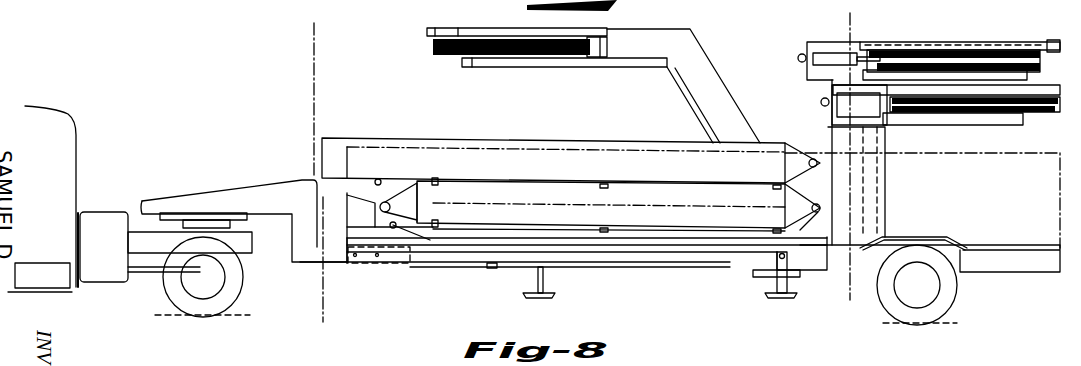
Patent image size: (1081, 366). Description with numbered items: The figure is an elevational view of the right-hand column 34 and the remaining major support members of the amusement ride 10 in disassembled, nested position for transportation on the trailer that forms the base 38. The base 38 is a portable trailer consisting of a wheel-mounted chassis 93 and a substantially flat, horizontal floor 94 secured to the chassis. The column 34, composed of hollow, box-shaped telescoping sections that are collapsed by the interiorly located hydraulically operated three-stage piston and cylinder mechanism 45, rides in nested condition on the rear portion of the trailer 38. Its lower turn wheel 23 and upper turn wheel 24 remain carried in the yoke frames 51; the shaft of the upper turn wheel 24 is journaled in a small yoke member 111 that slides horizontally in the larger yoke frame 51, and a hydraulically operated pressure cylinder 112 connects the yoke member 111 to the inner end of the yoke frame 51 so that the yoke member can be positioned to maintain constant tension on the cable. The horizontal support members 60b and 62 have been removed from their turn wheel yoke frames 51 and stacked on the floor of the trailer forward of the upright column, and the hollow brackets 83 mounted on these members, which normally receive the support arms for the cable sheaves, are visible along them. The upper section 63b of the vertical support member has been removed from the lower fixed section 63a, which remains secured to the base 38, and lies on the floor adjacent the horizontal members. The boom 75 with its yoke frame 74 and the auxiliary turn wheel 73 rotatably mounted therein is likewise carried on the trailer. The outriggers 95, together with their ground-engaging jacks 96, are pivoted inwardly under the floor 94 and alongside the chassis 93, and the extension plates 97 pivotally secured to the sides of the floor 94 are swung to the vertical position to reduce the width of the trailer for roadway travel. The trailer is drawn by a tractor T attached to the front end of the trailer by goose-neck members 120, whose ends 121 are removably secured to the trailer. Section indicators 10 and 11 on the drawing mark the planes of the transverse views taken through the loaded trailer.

The tractor T is at (77, 140).
The base 38 is at (308, 148).
The goose-neck members 120 is at (250, 190).
The lower section of vertical support member 63a is at (357, 210).
The section of upper horizontal member 60b is at (560, 140).
The lower horizontal member 62 is at (540, 178).
The upper section of vertical support member 63b is at (697, 205).
The hollow brackets 83 is at (616, 222).
The wheel-mounted chassis 93 is at (467, 258).
The ends of goose-neck members 121 is at (397, 258).
The outriggers 95 is at (727, 262).
The jacks 96 is at (545, 272).
The auxiliary turn wheel 73 is at (437, 50).
The yoke frame 74 is at (491, 28).
The boom 75 is at (703, 78).
The pressure cylinder 112 is at (827, 62).
The yoke member 111 is at (925, 40).
The yoke frame 51 is at (1058, 40).
The upper turn wheel 24 is at (1033, 73).
The lower turn wheel 23 is at (1040, 112).
The extension plates 97 is at (1027, 150).
The support column 34 is at (900, 170).
The three-stage piston and cylinder mechanism 45 is at (890, 198).
The floor 94 is at (1020, 243).
The amusement ride 10 is at (314, 23).
The section line 11- 11 is at (835, 23).